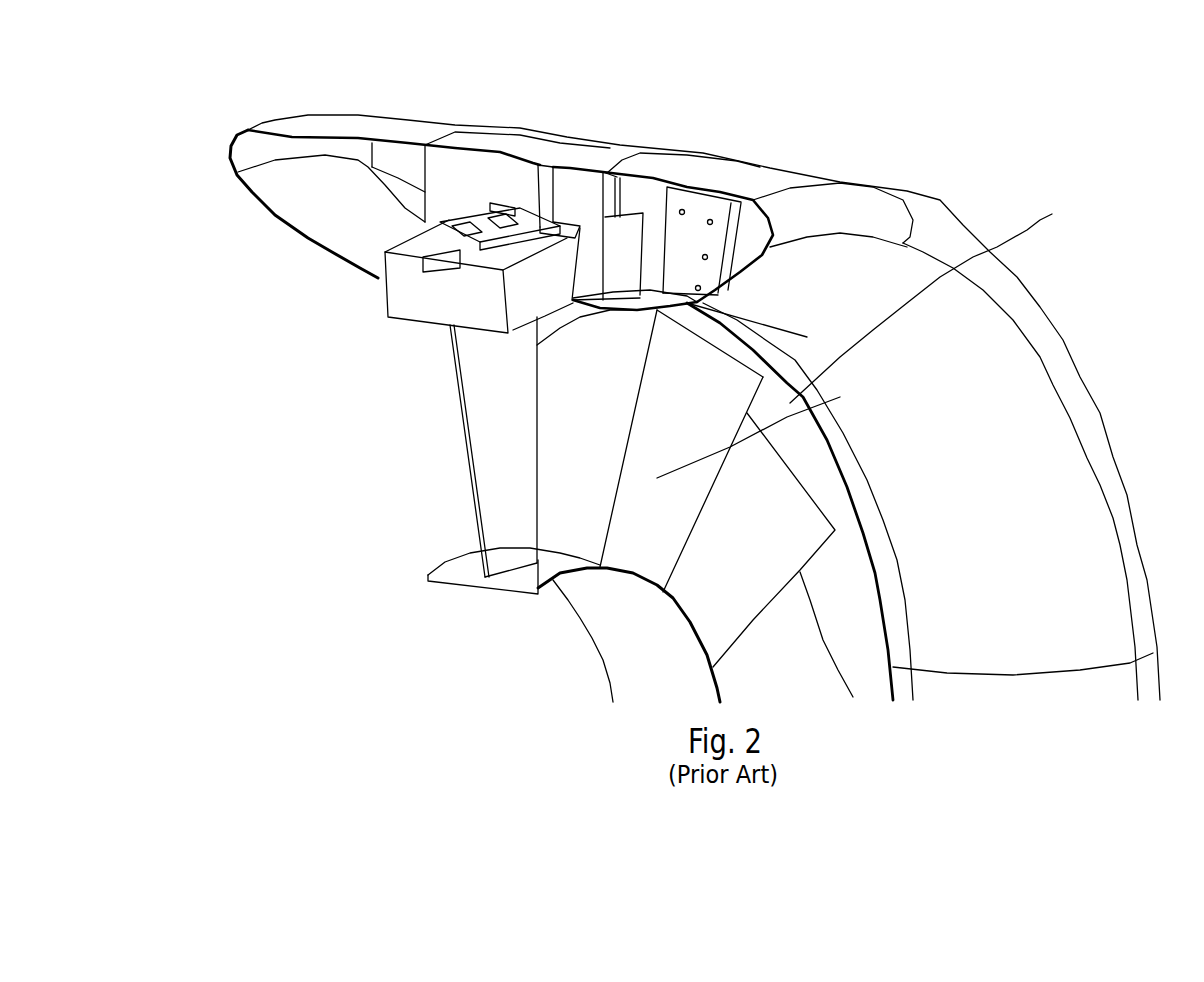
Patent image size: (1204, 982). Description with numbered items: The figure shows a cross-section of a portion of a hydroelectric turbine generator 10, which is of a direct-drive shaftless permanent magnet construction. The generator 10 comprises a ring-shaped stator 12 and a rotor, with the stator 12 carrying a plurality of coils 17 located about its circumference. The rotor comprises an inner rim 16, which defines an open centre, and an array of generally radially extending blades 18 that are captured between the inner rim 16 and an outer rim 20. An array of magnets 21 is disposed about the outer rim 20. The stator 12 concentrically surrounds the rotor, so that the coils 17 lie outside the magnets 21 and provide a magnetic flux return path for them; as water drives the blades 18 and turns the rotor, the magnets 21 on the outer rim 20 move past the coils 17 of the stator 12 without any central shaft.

The generator 10 is at (763, 101).
The stator 12 is at (429, 447).
The inner rim 16 is at (407, 645).
The coils 17 is at (467, 237).
The blades 18 is at (864, 502).
The outer rim 20 is at (920, 441).
The magnets 21 is at (356, 274).